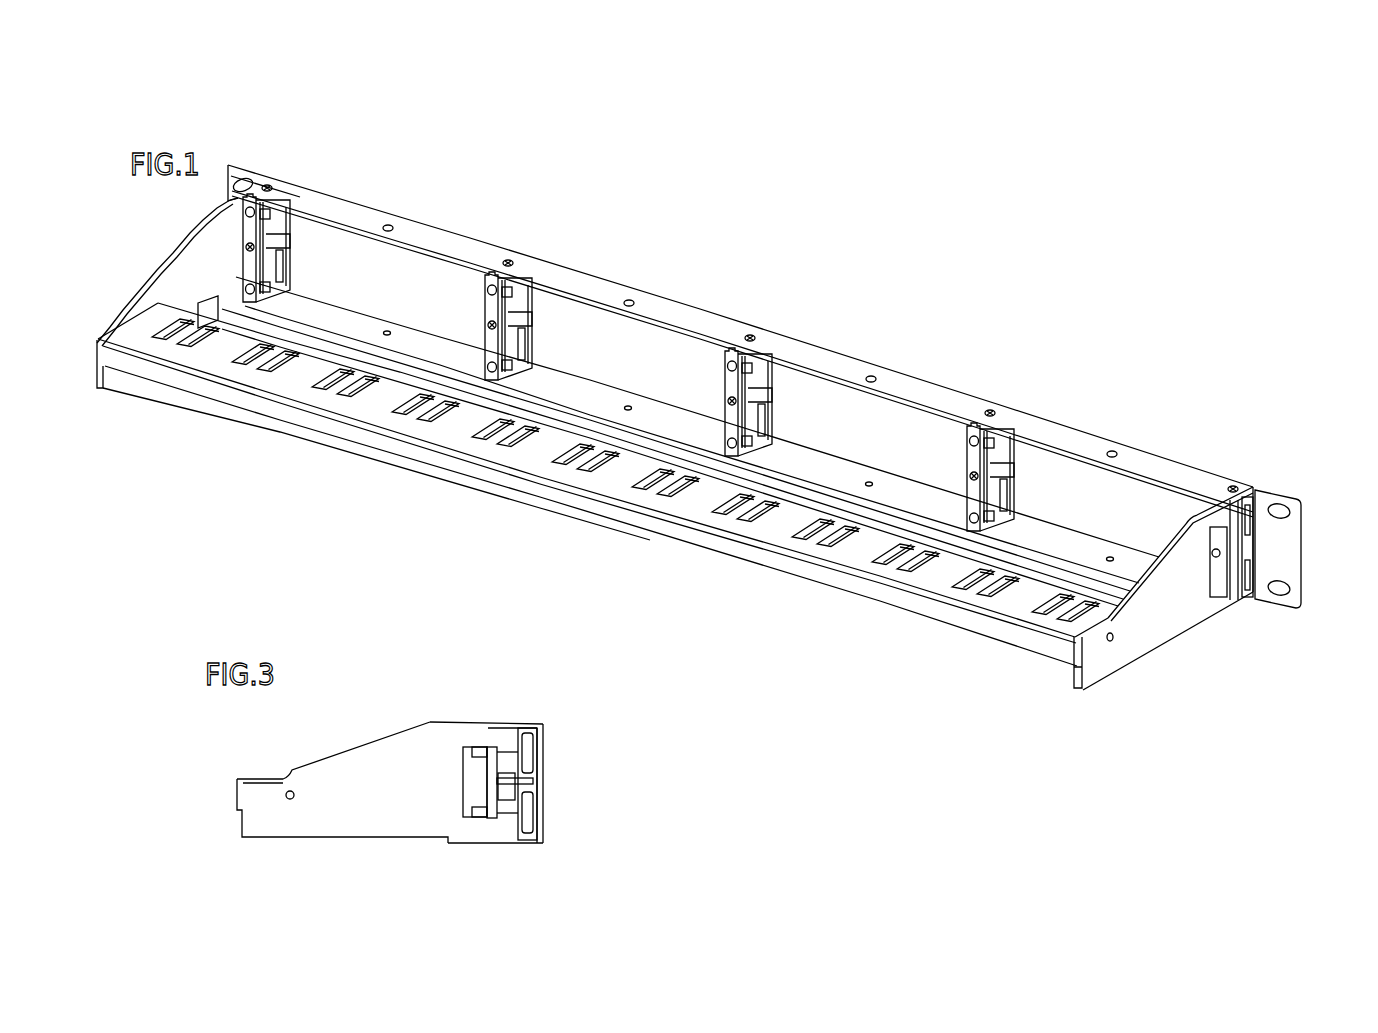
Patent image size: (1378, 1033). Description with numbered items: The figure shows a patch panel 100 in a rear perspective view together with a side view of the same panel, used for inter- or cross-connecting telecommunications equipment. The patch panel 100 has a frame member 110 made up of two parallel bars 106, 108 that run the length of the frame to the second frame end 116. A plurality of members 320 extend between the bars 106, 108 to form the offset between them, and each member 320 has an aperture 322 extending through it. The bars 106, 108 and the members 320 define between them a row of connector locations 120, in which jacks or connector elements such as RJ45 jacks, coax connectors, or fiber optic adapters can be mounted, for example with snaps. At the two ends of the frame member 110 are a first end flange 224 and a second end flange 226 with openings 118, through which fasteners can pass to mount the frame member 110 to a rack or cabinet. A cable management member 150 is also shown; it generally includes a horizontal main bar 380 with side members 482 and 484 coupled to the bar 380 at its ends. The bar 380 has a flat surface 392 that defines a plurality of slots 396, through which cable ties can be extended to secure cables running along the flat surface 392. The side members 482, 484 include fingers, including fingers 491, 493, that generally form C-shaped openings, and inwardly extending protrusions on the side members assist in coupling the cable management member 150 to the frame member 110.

In FIG. 1, the patch panel 100 is at (890, 261).
In FIG. 3, the patch panel 100 is at (664, 763).
In FIG. 1, the bar 106 is at (744, 434).
In FIG. 1, the bar 108 is at (668, 443).
In FIG. 1, the frame member 110 is at (740, 341).
In FIG. 3, the frame member 110 is at (573, 773).
In FIG. 1, the second frame end 116 is at (1262, 456).
In FIG. 1, the openings 118 is at (1285, 517).
In FIG. 1, the connector locations 120 is at (392, 287).
In FIG. 1, the cable management member 150 is at (610, 495).
In FIG. 1, the first end flange 224 is at (276, 165).
In FIG. 1, the second end flange 226 is at (1265, 583).
In FIG. 1, the member 320 is at (786, 375).
In FIG. 3, the member 320 is at (544, 784).
In FIG. 3, the aperture 322 is at (565, 798).
In FIG. 1, the horizontal main bar 380 is at (598, 492).
In FIG. 1, the flat surface 392 is at (743, 556).
In FIG. 1, the slots 396 is at (320, 427).
In FIG. 1, the side member 482 is at (167, 272).
In FIG. 1, the side member 484 is at (1168, 611).
In FIG. 3, the side member 484 is at (342, 755).
In FIG. 3, the finger 491 is at (486, 704).
In FIG. 3, the finger 493 is at (495, 864).